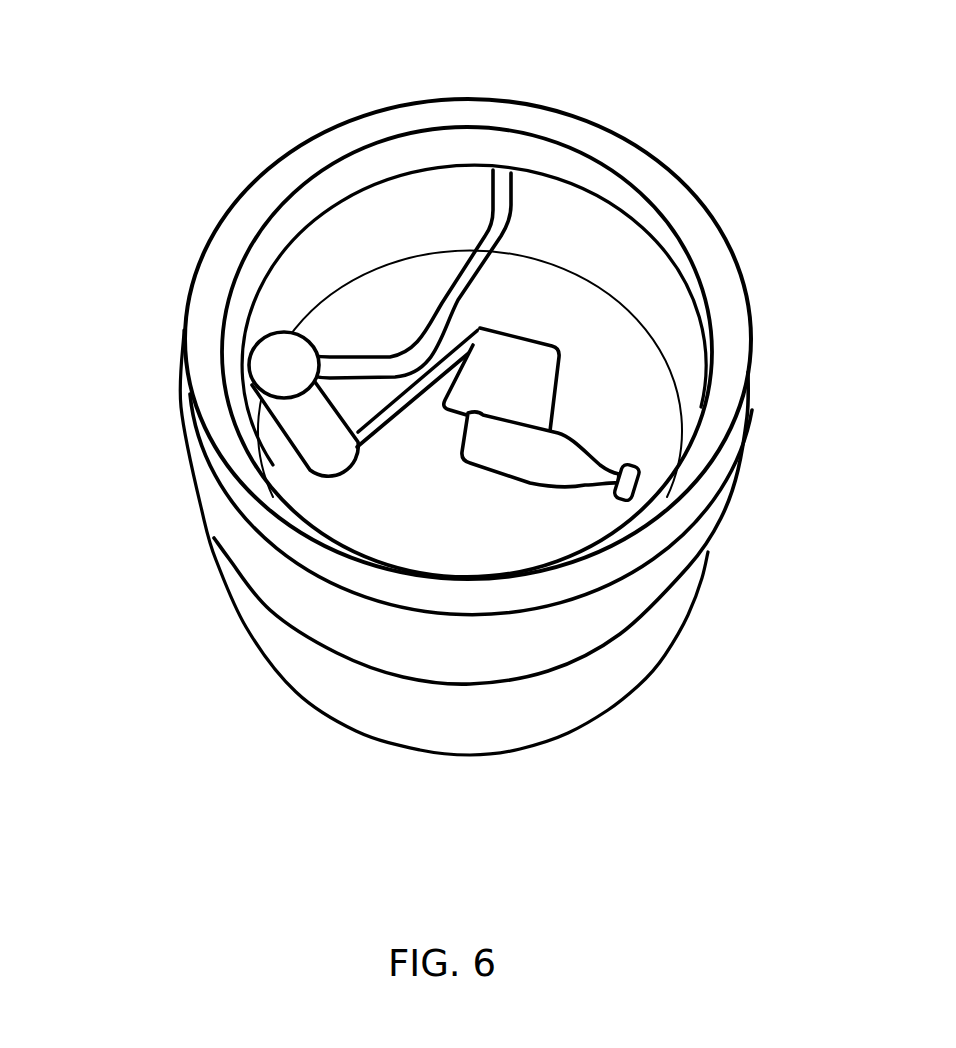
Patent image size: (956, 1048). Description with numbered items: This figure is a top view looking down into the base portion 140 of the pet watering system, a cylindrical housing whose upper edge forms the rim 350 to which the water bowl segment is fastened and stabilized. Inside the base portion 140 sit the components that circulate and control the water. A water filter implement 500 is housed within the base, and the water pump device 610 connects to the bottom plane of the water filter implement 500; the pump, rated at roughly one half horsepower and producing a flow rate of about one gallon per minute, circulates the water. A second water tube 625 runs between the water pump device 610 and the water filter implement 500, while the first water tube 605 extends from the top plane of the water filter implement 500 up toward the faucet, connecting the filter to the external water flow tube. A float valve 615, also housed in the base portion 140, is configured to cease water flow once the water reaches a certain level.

The base portion 140 is at (268, 607).
The rim 350 is at (224, 500).
The water filter implement 500 is at (277, 416).
The first water tube 605 is at (470, 228).
The water pump device 610 is at (557, 347).
The float valve 615 is at (577, 442).
The second water tube 625 is at (408, 395).